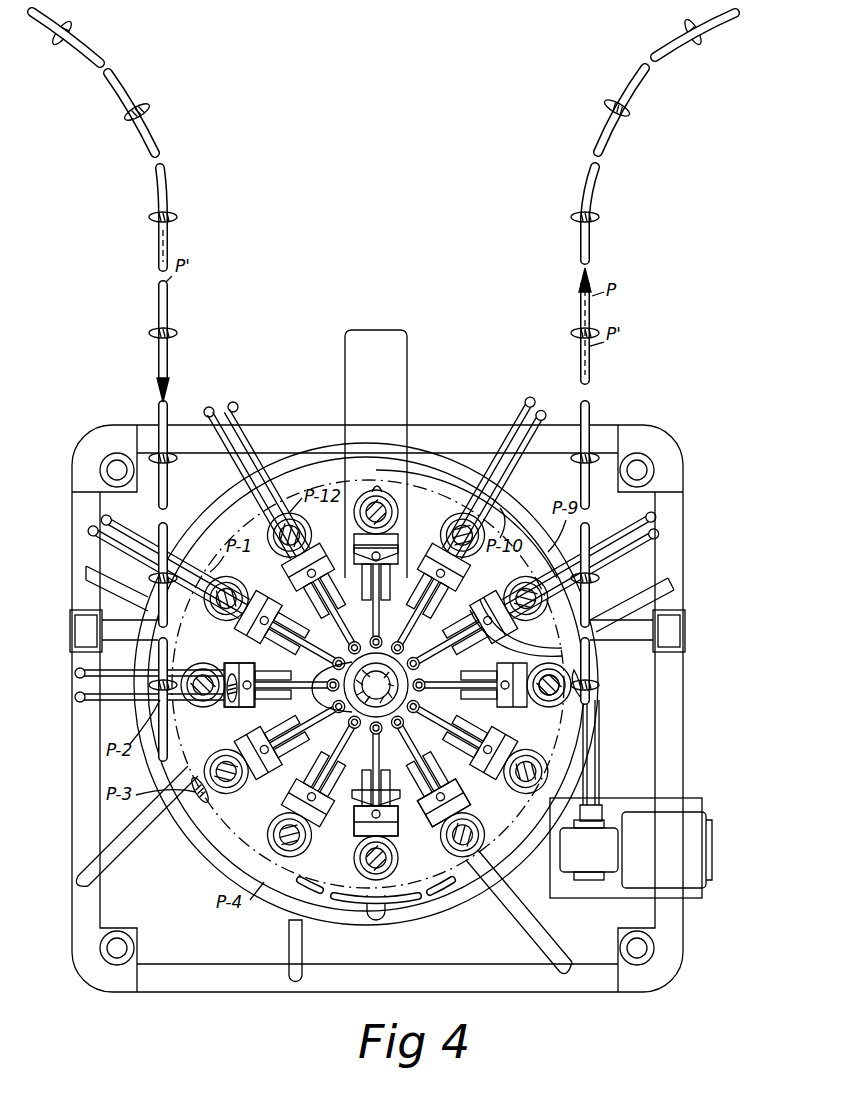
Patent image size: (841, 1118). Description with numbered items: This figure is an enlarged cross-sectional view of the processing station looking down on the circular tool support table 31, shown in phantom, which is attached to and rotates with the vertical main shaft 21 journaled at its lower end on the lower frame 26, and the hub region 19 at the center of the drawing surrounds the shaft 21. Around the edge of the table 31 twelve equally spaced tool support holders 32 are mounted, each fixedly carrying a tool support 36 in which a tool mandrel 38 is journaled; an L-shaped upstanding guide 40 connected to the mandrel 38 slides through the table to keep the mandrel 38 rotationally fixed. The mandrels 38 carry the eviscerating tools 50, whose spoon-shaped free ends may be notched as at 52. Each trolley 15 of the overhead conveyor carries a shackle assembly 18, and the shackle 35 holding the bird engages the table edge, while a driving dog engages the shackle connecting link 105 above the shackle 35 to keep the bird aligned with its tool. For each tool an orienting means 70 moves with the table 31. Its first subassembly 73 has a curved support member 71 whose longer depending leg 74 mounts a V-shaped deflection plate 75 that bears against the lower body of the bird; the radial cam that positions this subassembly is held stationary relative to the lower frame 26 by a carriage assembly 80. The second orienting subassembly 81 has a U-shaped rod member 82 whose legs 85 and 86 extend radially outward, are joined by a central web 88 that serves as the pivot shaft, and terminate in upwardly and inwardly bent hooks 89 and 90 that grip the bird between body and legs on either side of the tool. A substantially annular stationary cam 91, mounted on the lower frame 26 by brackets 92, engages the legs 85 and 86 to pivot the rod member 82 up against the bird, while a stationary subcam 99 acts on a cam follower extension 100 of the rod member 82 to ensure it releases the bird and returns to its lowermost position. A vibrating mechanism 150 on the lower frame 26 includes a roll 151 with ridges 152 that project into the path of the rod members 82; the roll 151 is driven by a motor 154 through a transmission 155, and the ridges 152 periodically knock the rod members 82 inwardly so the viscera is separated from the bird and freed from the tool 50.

The shackle assembly 18 is at (424, 684).
The shackle 35 is at (104, 66).
The shackle connecting link 105 is at (66, 52).
The carriage assembly 80 is at (404, 362).
The hook 89 is at (226, 388).
The hook 90 is at (237, 402).
The second orienting subassembly 81 is at (244, 412).
The leg 86 is at (246, 414).
The leg 85 is at (222, 436).
The notch 52 is at (380, 485).
The eviscerating tool 50 is at (394, 492).
The V-shaped deflection plate 75 is at (398, 546).
The tool support table 31 is at (520, 510).
The central web 88 is at (334, 602).
The curved support member 71 is at (410, 650).
The main shaft 21 is at (412, 718).
The stationary subcam 99 is at (534, 644).
The hub 19 is at (338, 702).
The L-shaped upstanding guide 40 is at (244, 700).
The cam follower extension 100 is at (278, 702).
The tool mandrel 38 is at (546, 692).
The tool support 36 is at (560, 702).
The ridges 152 is at (600, 704).
The roll 151 is at (602, 724).
The lower frame 26 is at (676, 750).
The vibrating mechanism 150 is at (631, 830).
The orienting means 70 is at (154, 816).
The brackets 92 is at (146, 858).
The longer depending leg 74 is at (360, 740).
The first subassembly 73 is at (412, 748).
The U-shaped rod member 82 is at (356, 832).
The tool support holder 32 is at (352, 854).
The trolley 15 is at (376, 798).
The motor 154 is at (678, 840).
The transmission 155 is at (608, 860).
The stationary cam 91 is at (226, 880).